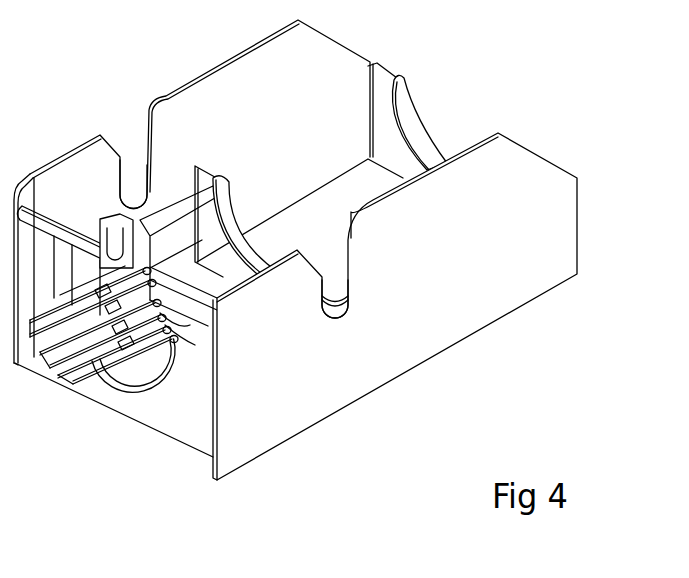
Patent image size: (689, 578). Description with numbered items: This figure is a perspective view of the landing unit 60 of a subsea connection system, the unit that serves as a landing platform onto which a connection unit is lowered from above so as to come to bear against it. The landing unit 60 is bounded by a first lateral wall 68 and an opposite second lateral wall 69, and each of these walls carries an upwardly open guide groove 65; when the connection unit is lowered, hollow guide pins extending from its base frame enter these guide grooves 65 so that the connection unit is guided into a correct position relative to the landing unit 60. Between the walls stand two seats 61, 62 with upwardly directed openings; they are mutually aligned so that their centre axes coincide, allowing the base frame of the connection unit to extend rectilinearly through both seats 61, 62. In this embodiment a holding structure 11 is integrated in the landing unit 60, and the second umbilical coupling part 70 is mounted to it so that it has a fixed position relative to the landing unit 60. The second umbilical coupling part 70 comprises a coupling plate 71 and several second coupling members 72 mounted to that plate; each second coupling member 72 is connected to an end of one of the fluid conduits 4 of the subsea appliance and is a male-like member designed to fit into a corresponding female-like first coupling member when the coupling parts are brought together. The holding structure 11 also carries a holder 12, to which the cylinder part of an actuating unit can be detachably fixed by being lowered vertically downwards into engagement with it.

The fluid conduit 4 is at (155, 365).
The holding structure 11 is at (181, 415).
The holder 12 is at (110, 247).
The landing unit 60 is at (330, 274).
The seat 61 is at (232, 199).
The seat 62 is at (407, 117).
The guide groove 65 is at (137, 166).
The first lateral wall 68 is at (560, 219).
The second lateral wall 69 is at (199, 93).
The second umbilical coupling part 70 is at (150, 357).
The coupling plate 71 is at (162, 313).
The second coupling member 72 is at (166, 324).